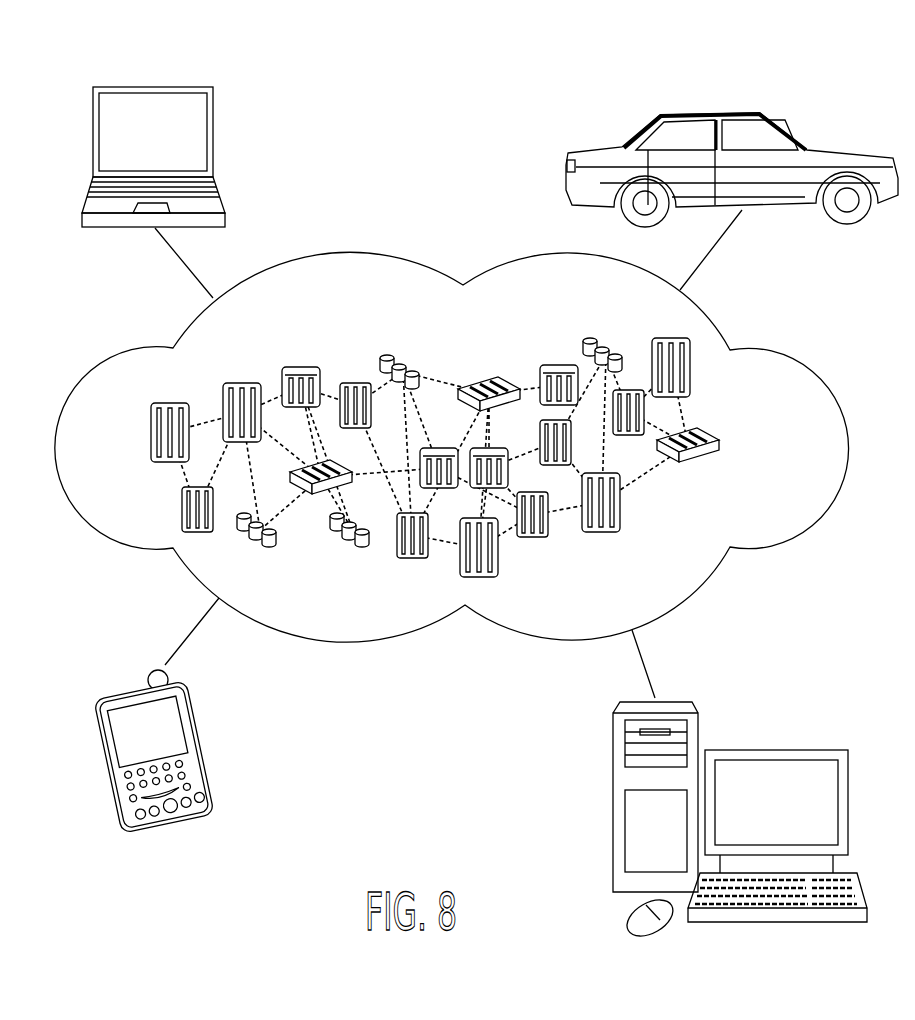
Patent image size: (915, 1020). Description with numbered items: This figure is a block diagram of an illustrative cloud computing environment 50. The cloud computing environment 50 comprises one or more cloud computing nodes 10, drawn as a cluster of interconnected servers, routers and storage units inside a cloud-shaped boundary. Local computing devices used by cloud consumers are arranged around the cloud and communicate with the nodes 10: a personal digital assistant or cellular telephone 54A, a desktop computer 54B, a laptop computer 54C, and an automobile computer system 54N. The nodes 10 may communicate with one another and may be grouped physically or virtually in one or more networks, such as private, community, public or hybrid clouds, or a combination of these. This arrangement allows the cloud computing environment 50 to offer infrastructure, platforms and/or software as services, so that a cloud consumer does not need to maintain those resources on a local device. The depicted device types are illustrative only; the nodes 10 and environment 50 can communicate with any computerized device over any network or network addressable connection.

The cloud computing node 10 is at (726, 446).
The cloud computing environment 50 is at (790, 353).
The personal digital assistant or cellular telephone 54A is at (132, 688).
The desktop computer 54B is at (778, 750).
The laptop computer 54C is at (153, 85).
The automobile computer system 54N is at (712, 112).